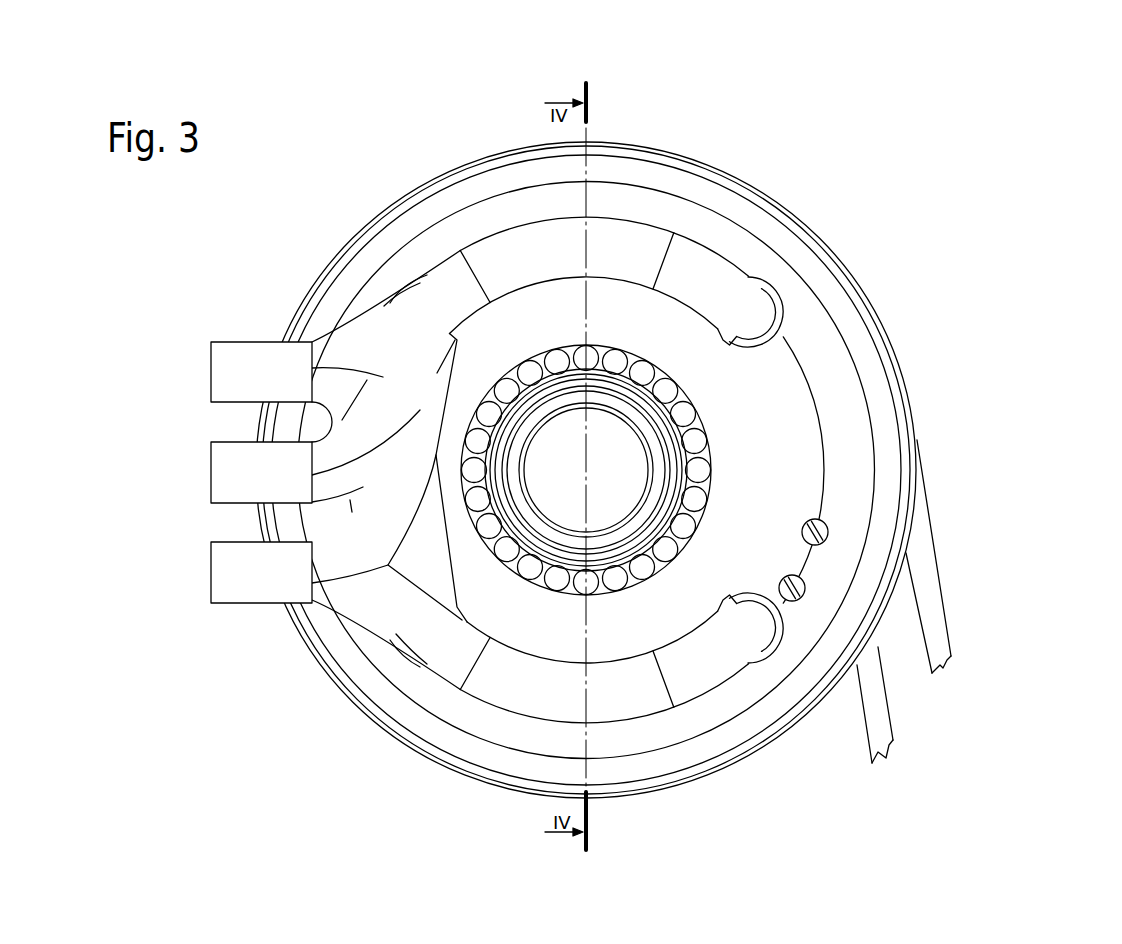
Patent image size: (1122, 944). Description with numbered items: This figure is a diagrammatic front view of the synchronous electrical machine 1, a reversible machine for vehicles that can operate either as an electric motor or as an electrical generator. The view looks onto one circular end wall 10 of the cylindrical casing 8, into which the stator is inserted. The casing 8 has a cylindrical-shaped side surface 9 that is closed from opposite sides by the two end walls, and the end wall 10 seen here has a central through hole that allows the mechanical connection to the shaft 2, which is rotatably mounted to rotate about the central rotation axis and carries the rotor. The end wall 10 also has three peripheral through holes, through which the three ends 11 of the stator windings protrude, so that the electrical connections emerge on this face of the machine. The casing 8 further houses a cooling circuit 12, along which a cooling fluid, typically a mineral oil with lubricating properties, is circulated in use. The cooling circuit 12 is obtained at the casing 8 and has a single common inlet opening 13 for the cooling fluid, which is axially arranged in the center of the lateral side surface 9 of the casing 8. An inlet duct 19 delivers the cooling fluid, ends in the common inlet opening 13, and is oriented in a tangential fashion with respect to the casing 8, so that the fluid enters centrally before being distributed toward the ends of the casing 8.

The synchronous electrical machine 1 is at (1047, 119).
The shaft 2 is at (602, 474).
The casing 8 is at (452, 136).
The side surface 9 is at (391, 205).
The end wall 10 is at (773, 360).
The ends of the stator windings 11 is at (247, 357).
The cooling circuit 12 is at (832, 770).
The common inlet opening 13 is at (893, 616).
The inlet duct 19 is at (940, 638).